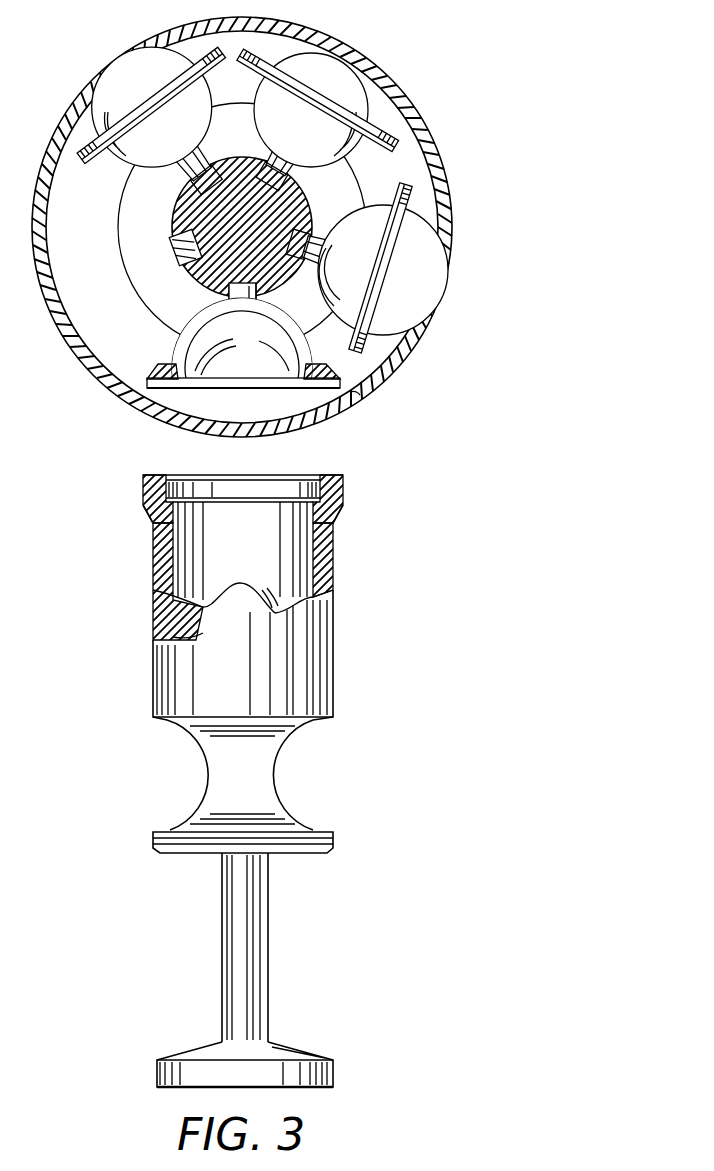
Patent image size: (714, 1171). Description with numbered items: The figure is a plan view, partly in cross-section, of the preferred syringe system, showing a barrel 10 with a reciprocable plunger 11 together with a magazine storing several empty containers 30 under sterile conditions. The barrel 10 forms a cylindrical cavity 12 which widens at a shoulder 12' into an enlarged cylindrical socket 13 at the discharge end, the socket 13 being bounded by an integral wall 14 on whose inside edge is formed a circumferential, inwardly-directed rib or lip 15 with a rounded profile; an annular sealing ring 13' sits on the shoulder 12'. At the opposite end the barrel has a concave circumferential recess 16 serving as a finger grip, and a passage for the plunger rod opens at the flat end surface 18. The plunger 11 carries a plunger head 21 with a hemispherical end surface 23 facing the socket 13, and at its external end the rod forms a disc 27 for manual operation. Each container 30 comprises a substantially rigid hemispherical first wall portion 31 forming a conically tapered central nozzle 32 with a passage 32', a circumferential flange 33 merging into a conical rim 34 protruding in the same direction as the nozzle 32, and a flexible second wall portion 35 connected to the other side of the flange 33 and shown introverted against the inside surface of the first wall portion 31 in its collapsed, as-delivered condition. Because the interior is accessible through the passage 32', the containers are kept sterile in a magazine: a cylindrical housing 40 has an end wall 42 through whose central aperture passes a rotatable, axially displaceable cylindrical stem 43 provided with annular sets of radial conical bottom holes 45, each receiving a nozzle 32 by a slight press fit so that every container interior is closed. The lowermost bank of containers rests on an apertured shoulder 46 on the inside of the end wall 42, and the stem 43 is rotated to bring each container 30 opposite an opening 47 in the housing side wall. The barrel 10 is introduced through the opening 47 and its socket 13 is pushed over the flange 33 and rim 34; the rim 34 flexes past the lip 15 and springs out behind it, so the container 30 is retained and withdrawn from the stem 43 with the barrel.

The barrel 10 is at (245, 762).
The plunger 11 is at (289, 942).
The cylindrical cavity 12 is at (273, 609).
The shoulder 12' is at (210, 528).
The cylindrical socket 13 is at (243, 467).
The annular sealing ring 13' is at (210, 497).
The wall 14 is at (341, 503).
The rib or lip 15 is at (218, 476).
The circumferential recess 16 is at (268, 774).
The flat end surface 18 is at (313, 853).
The plunger head 21 is at (205, 604).
The hemispherical end surface 23 is at (236, 582).
The disc 27 is at (325, 1072).
The container 30 is at (266, 237).
The first wall portion 31 is at (183, 340).
The nozzle 32 is at (213, 303).
The nozzle passage 32' is at (283, 303).
The circumferential flange 33 is at (170, 366).
The conical rim 34 is at (143, 372).
The second wall portion 35 is at (280, 330).
The cylindrical housing 40 is at (431, 101).
The end wall 42 is at (440, 257).
The cylindrical stem 43 is at (178, 212).
The radial conical bottom holes 45 is at (182, 250).
The apertured shoulder 46 is at (120, 243).
The opening 47 is at (357, 397).